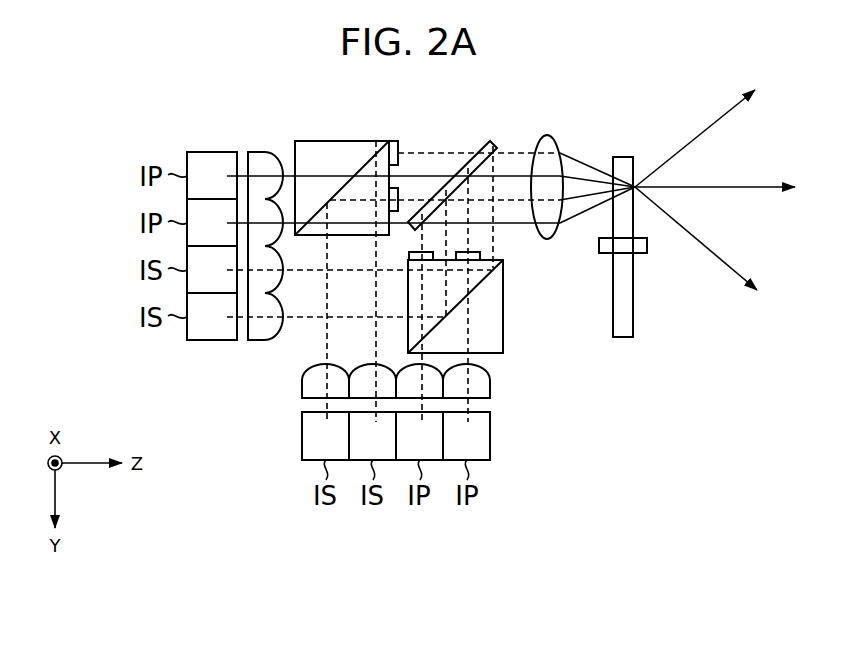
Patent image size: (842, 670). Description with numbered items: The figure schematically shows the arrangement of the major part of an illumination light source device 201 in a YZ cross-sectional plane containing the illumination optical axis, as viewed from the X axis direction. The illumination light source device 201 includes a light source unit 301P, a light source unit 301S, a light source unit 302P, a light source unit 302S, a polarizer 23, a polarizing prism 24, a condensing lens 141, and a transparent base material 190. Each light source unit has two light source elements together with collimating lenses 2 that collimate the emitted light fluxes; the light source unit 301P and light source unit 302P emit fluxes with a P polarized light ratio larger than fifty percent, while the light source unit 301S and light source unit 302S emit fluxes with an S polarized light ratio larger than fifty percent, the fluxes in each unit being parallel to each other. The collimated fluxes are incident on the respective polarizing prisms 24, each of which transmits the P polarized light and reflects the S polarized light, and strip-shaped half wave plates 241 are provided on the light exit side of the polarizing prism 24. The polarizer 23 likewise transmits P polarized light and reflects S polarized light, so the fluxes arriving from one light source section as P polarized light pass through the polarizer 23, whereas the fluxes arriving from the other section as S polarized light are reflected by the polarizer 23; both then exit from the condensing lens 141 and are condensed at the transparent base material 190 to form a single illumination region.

The collimating lens 2 is at (264, 151).
The polarizer 23 is at (491, 142).
The polarizing prism 24 is at (350, 140).
The half wave plate 241 is at (398, 143).
The condensing lens 141 is at (548, 135).
The transparent base material 190 is at (623, 156).
The illumination light source device 201 is at (705, 577).
The light source unit 301P is at (137, 152).
The light source unit 302S is at (137, 247).
The light source unit 301S is at (396, 498).
The light source unit 302P is at (490, 498).